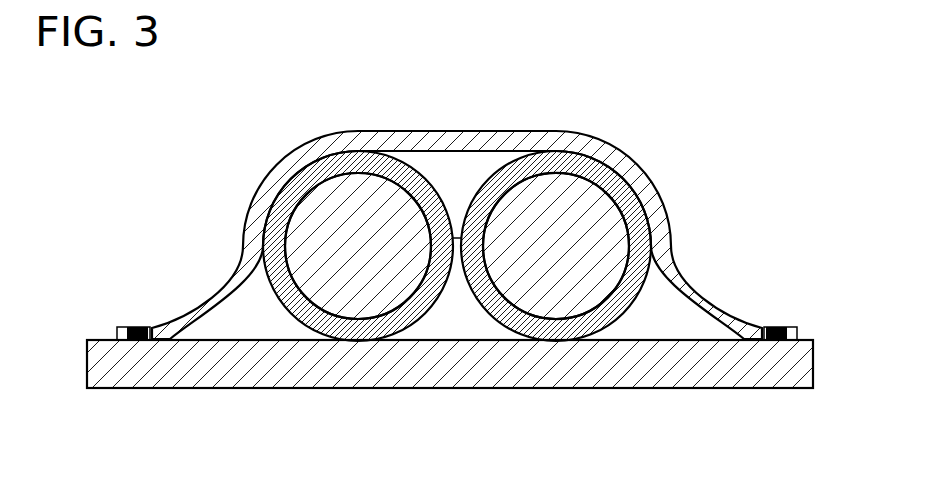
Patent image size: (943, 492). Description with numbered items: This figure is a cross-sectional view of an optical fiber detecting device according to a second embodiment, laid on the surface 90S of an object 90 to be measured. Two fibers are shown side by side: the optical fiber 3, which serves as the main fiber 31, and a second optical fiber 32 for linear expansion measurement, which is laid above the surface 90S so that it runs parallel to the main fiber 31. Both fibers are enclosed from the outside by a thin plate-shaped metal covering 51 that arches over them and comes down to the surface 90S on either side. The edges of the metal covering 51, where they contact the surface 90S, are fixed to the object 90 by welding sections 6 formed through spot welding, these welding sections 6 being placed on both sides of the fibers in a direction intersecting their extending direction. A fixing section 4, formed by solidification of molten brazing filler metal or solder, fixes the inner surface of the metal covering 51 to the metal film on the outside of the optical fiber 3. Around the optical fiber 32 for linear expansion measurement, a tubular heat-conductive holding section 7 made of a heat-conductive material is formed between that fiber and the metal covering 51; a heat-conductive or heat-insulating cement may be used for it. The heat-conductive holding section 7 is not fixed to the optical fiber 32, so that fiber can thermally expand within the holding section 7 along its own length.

The optical fiber 3 is at (358, 246).
The main fiber 31 is at (356, 193).
The optical fiber for linear expansion measurement 32 is at (560, 193).
The fixing section 4 is at (297, 190).
The metal covering 51 is at (462, 138).
The heat-conductive holding section 7 is at (617, 192).
The welding sections 6 is at (140, 325).
The object to be measured 90 is at (158, 389).
The surface 90S is at (274, 340).